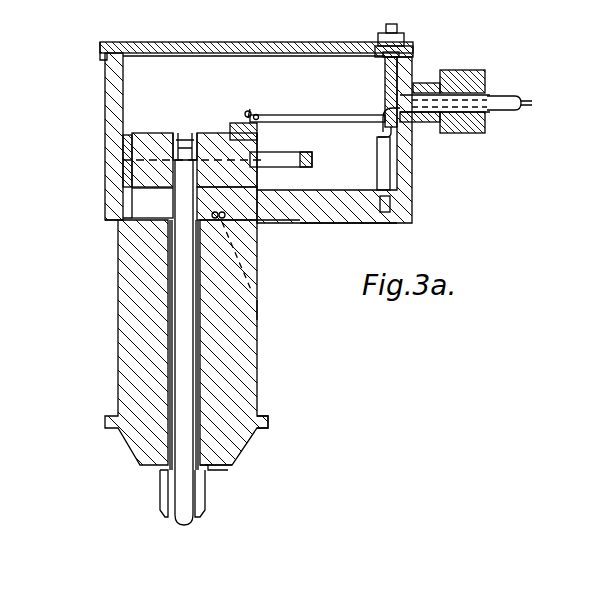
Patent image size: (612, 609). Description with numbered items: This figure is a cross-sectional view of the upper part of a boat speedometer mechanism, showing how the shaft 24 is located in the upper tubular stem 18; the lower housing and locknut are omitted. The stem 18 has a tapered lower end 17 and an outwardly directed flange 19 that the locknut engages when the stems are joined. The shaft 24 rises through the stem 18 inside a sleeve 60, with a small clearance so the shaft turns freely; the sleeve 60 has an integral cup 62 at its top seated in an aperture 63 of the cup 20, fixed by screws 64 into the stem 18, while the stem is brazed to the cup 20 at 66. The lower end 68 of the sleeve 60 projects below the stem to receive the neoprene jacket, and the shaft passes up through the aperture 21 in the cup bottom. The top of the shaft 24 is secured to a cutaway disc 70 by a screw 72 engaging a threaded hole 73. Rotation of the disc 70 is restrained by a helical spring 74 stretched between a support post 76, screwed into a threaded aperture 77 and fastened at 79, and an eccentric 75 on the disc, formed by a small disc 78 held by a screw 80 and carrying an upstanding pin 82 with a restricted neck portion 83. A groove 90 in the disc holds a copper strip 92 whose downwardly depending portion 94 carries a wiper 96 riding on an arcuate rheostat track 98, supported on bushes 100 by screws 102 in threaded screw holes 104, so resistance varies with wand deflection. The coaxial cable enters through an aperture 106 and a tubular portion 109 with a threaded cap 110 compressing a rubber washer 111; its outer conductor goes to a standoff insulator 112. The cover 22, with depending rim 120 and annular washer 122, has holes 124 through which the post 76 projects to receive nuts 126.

The tapered lower end 17 is at (238, 461).
The upper tubular stem 18 is at (257, 360).
The outwardly directed flange 19 is at (268, 421).
The cup 20 is at (410, 198).
The aperture 21 is at (130, 189).
The top cover 22 is at (335, 42).
The shaft 24 is at (178, 505).
The sleeve 60 is at (203, 391).
The cup 62 is at (262, 270).
The aperture 63 is at (118, 221).
The screws 64 is at (258, 309).
The brazed joint 66 is at (118, 226).
The lower end of sleeve 68 is at (210, 471).
The cutaway disc 70 is at (140, 133).
The screw 72 is at (185, 133).
The threaded hole 73 is at (125, 167).
The helical spring 74 is at (318, 116).
The eccentric 75 is at (300, 154).
The support post 76 is at (388, 88).
The threaded aperture 77 is at (400, 214).
The small disc 78 is at (242, 118).
The spring fastening point 79 is at (383, 136).
The screw 80 is at (248, 112).
The upstanding pin 82 is at (258, 115).
The restricted neck portion 83 is at (252, 110).
The groove 90 is at (123, 125).
The copper strip 92 is at (215, 133).
The downwardly depending portion 94 is at (126, 147).
The wiper 96 is at (178, 203).
The rheostat track 98 is at (313, 161).
The bushes 100 is at (258, 225).
The screws 102 is at (330, 224).
The threaded screw holes 104 is at (245, 250).
The aperture 106 is at (443, 84).
The tubular portion 109 is at (435, 130).
The threaded cap 110 is at (490, 95).
The rubber washer 111 is at (498, 100).
The standoff insulator 112 is at (390, 159).
The depending rim 120 is at (100, 50).
The annular washer 122 is at (150, 42).
The holes 124 is at (410, 47).
The nuts 126 is at (400, 34).